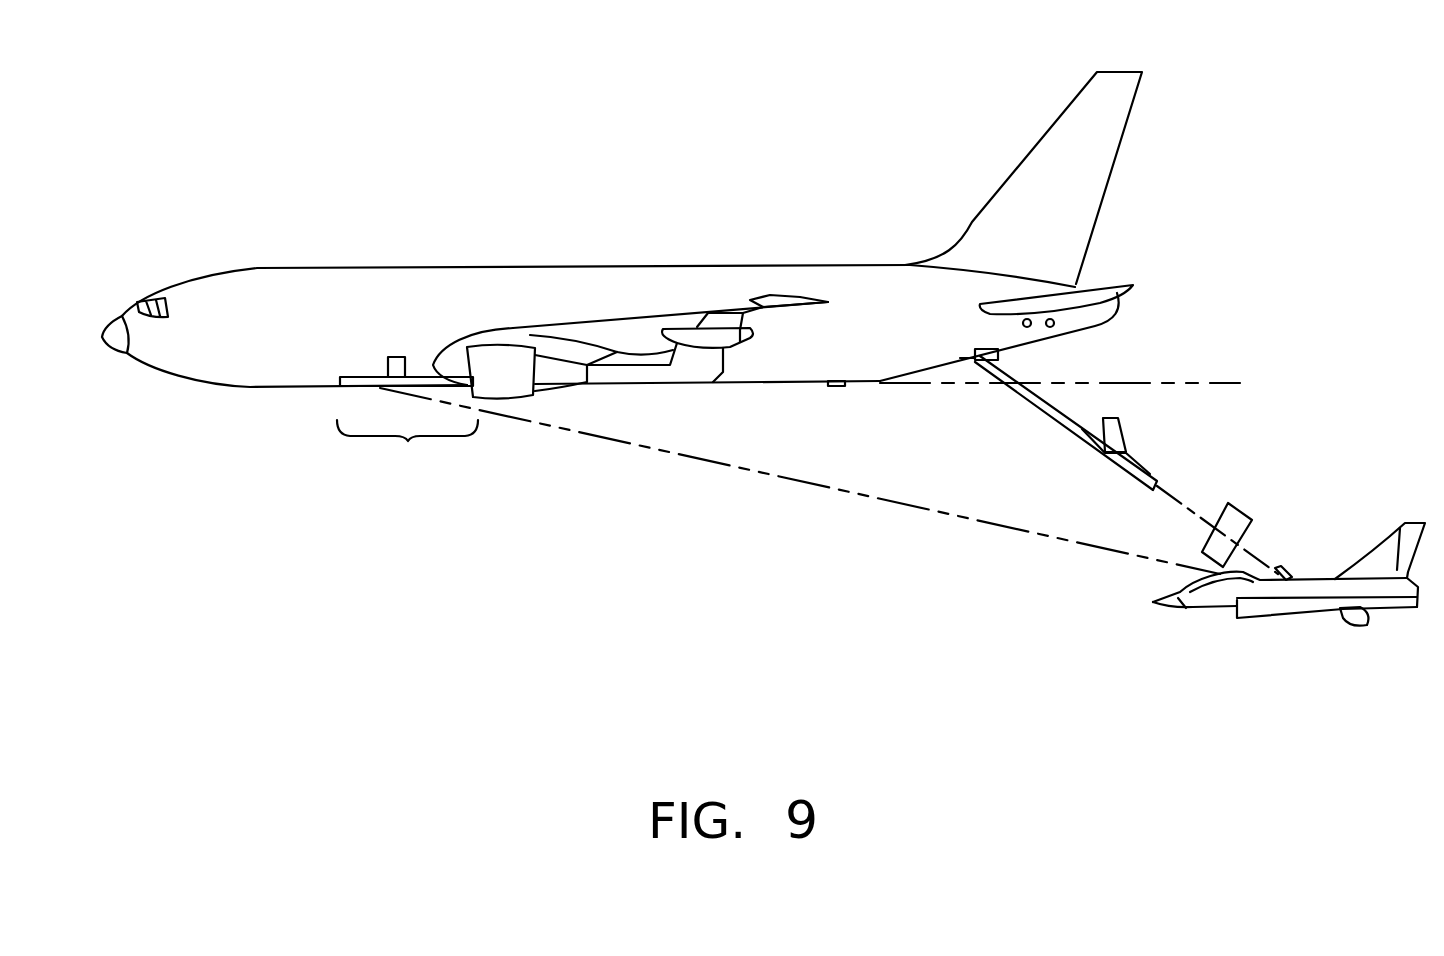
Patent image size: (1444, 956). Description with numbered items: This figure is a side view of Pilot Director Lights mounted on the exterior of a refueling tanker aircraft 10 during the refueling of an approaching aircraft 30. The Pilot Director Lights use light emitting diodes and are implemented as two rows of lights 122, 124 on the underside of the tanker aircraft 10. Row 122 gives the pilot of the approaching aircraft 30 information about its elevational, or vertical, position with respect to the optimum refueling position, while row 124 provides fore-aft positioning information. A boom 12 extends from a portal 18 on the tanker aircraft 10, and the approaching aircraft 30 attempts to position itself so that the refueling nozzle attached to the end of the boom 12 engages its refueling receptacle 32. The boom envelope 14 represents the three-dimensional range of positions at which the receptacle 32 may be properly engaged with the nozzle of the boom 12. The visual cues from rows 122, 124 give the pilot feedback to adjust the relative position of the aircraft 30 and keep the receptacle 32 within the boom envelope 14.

The refueling tanker aircraft 10 is at (366, 268).
The boom 12 is at (1150, 473).
The boom envelope 14 is at (1233, 503).
The portal 18 is at (978, 355).
The approaching aircraft 30 is at (1387, 614).
The refueling receptacle 32 is at (1288, 577).
The row of lights 122 is at (408, 440).
The row of lights 124 is at (348, 445).